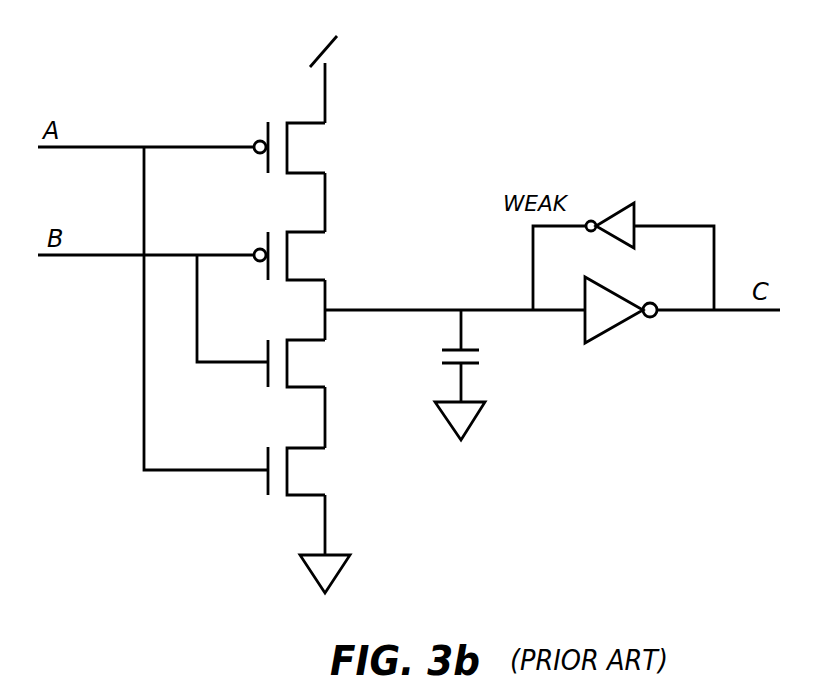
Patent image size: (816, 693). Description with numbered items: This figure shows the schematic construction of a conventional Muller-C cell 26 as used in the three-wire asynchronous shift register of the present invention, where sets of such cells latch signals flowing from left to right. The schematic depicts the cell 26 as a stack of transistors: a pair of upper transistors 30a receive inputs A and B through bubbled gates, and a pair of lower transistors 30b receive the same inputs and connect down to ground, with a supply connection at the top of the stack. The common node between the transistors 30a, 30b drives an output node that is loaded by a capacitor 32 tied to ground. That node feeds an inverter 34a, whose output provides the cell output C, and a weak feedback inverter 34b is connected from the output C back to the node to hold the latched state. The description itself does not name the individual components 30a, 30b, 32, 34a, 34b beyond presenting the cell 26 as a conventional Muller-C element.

The Muller-C cell 26 is at (200, 83).
The p-channel transistor 30a is at (289, 150).
The n-channel transistor 30b is at (289, 365).
The capacitor 32 is at (472, 365).
The inverter 34a is at (607, 336).
The weak feedback inverter 34b is at (620, 208).